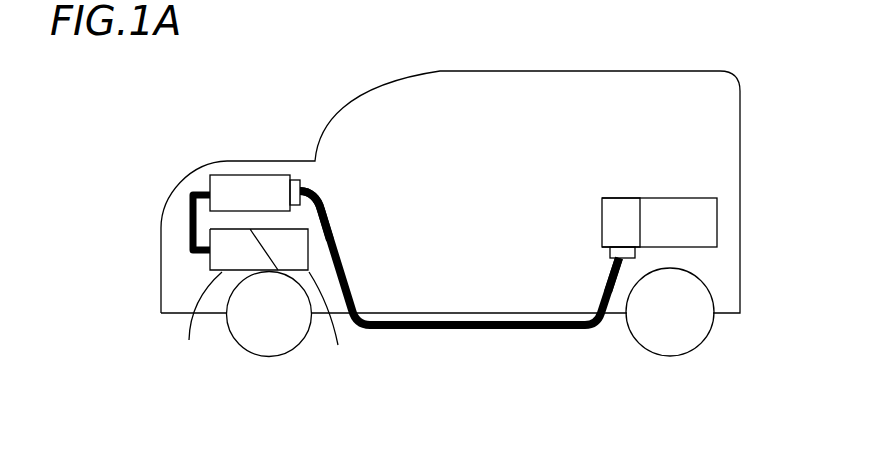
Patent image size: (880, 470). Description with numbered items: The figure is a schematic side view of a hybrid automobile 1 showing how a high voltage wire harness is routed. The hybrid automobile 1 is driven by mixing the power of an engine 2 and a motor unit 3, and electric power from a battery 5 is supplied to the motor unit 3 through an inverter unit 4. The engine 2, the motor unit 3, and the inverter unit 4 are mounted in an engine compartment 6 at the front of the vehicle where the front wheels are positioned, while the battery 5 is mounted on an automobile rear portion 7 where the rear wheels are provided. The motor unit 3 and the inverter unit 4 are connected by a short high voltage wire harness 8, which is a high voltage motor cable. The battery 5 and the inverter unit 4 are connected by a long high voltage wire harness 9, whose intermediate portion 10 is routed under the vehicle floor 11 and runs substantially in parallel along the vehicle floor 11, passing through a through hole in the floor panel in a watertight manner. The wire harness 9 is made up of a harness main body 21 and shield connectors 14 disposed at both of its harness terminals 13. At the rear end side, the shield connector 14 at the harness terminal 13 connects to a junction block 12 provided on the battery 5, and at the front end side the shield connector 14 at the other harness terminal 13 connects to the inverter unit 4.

The hybrid automobile 1 is at (497, 65).
The engine 2 is at (303, 263).
The motor unit 3 is at (220, 262).
The inverter unit 4 is at (230, 185).
The battery 5 is at (683, 206).
The engine compartment 6 is at (177, 292).
The automobile rear portion 7 is at (725, 285).
The high voltage wire harness 8 is at (190, 228).
The high voltage wire harness 9 is at (388, 330).
The intermediate portion 10 is at (488, 332).
The vehicle floor 11 is at (547, 316).
The junction block 12 is at (622, 206).
The harness terminal 13 is at (318, 197).
The shield connector 14 is at (298, 183).
The harness main body 21 is at (345, 272).